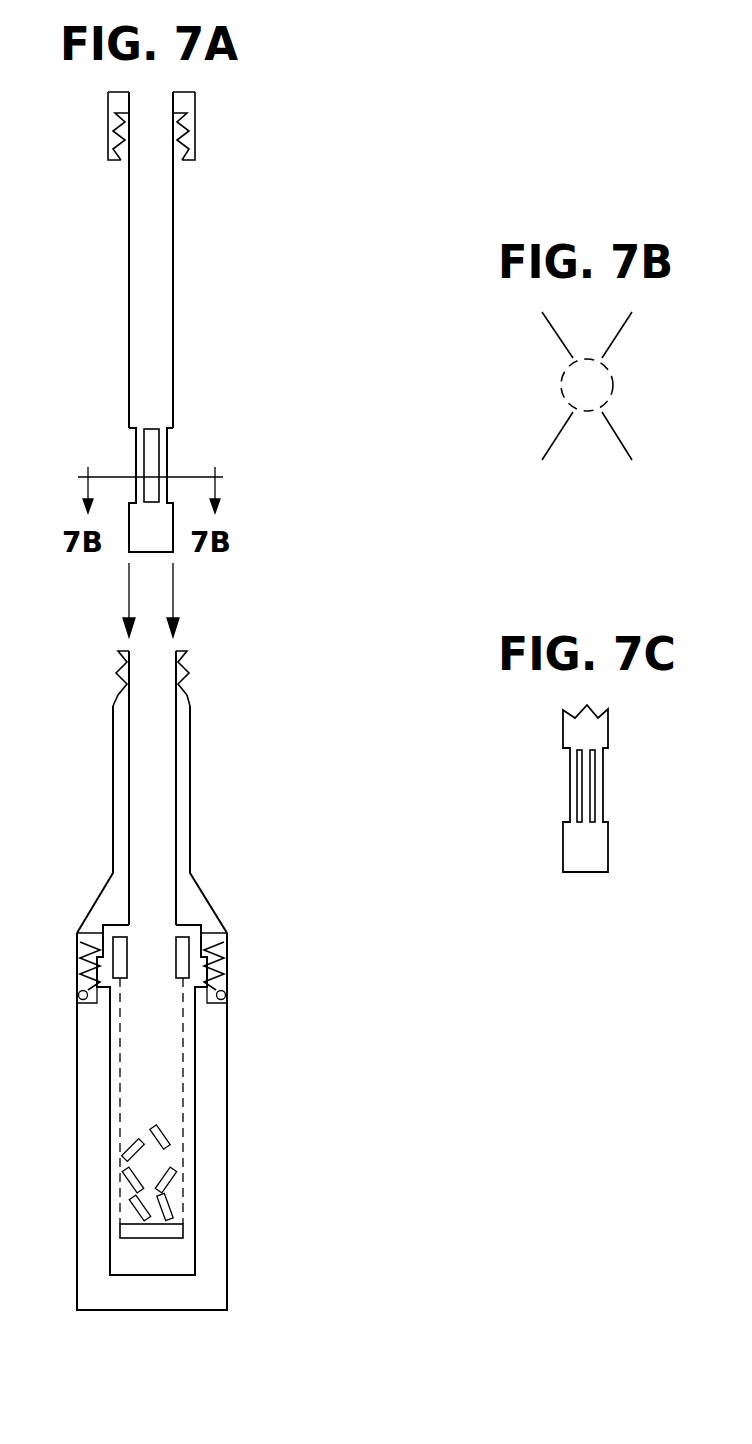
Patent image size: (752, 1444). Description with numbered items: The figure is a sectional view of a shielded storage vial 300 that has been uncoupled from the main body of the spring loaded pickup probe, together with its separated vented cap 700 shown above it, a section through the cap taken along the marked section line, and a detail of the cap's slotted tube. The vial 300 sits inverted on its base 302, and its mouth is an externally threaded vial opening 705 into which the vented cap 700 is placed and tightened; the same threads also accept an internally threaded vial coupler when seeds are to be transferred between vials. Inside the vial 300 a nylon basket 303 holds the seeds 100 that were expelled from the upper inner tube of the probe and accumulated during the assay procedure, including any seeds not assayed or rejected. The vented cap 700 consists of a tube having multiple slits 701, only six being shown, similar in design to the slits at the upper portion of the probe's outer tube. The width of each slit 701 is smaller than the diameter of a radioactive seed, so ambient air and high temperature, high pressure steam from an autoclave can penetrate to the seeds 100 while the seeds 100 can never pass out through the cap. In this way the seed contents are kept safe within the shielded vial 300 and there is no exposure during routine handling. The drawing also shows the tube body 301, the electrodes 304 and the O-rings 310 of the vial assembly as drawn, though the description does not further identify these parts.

In FIG. 7A, the vented cap 700 is at (175, 378).
In FIG. 7A, the externally threaded vial opening 705 is at (179, 662).
In FIG. 7A, the tube body 301 is at (198, 885).
In FIG. 7A, the shielded storage vial 300 is at (150, 1310).
In FIG. 7A, the base 302 is at (215, 1223).
In FIG. 7A, the electrode 304 is at (183, 945).
In FIG. 7A, the O-ring seal 310 is at (226, 995).
In FIG. 7A, the nylon basket 303 is at (188, 1075).
In FIG. 7A, the seeds 100 is at (170, 1185).
In FIG. 7C, the slits 701 is at (570, 780).